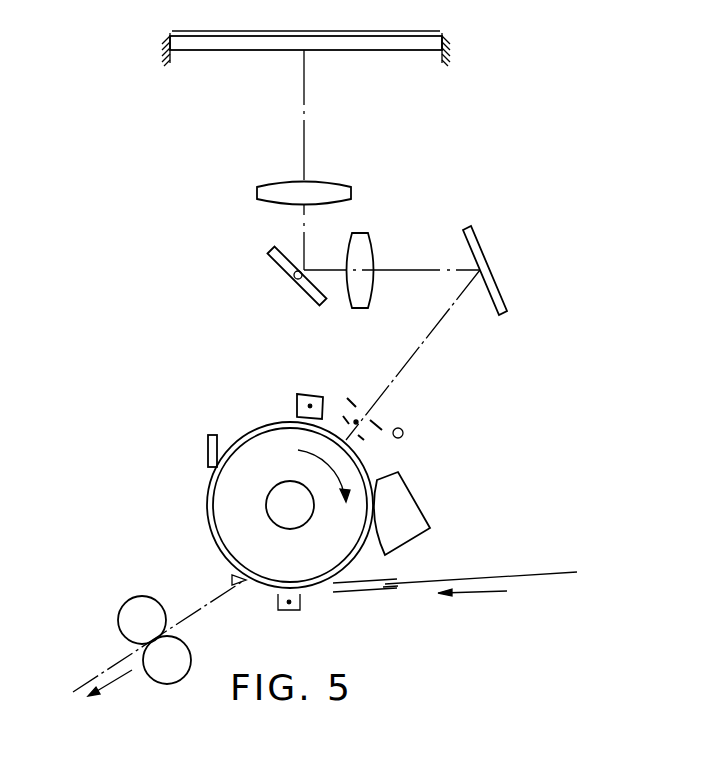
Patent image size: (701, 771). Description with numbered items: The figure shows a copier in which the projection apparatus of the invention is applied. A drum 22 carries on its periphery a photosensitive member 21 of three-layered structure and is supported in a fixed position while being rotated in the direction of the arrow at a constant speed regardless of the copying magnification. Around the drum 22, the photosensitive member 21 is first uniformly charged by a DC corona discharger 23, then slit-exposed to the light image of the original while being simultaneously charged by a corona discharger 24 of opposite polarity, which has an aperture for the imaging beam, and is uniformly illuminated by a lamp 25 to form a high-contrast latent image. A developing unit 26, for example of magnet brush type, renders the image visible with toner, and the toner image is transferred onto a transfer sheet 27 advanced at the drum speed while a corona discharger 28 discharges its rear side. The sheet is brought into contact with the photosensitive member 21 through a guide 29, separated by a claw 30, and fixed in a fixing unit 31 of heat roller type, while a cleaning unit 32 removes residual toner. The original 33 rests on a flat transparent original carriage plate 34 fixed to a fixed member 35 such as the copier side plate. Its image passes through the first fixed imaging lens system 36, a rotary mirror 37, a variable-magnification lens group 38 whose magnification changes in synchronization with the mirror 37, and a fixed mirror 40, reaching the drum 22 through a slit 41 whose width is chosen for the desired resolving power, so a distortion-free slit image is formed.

The photosensitive member 21 is at (207, 495).
The drum 22 is at (230, 532).
The DC corona discharger 23 is at (305, 394).
The corona discharger 24 is at (343, 427).
The lamp 25 is at (404, 436).
The developing unit 26 is at (415, 512).
The transfer sheet 27 is at (530, 580).
The corona discharger 28 is at (278, 608).
The guide 29 is at (383, 595).
The claw 30 is at (231, 581).
The fixing unit 31 is at (125, 607).
The cleaning unit 32 is at (208, 437).
The original 33 is at (438, 30).
The original carriage plate 34 is at (413, 50).
The fixed member 35 is at (162, 49).
The first fixed imaging lens system 36 is at (350, 192).
The rotary mirror 37 is at (307, 293).
The variable-magnification lens group 38 is at (366, 308).
The fixed mirror 40 is at (502, 295).
The slit 41 is at (383, 424).